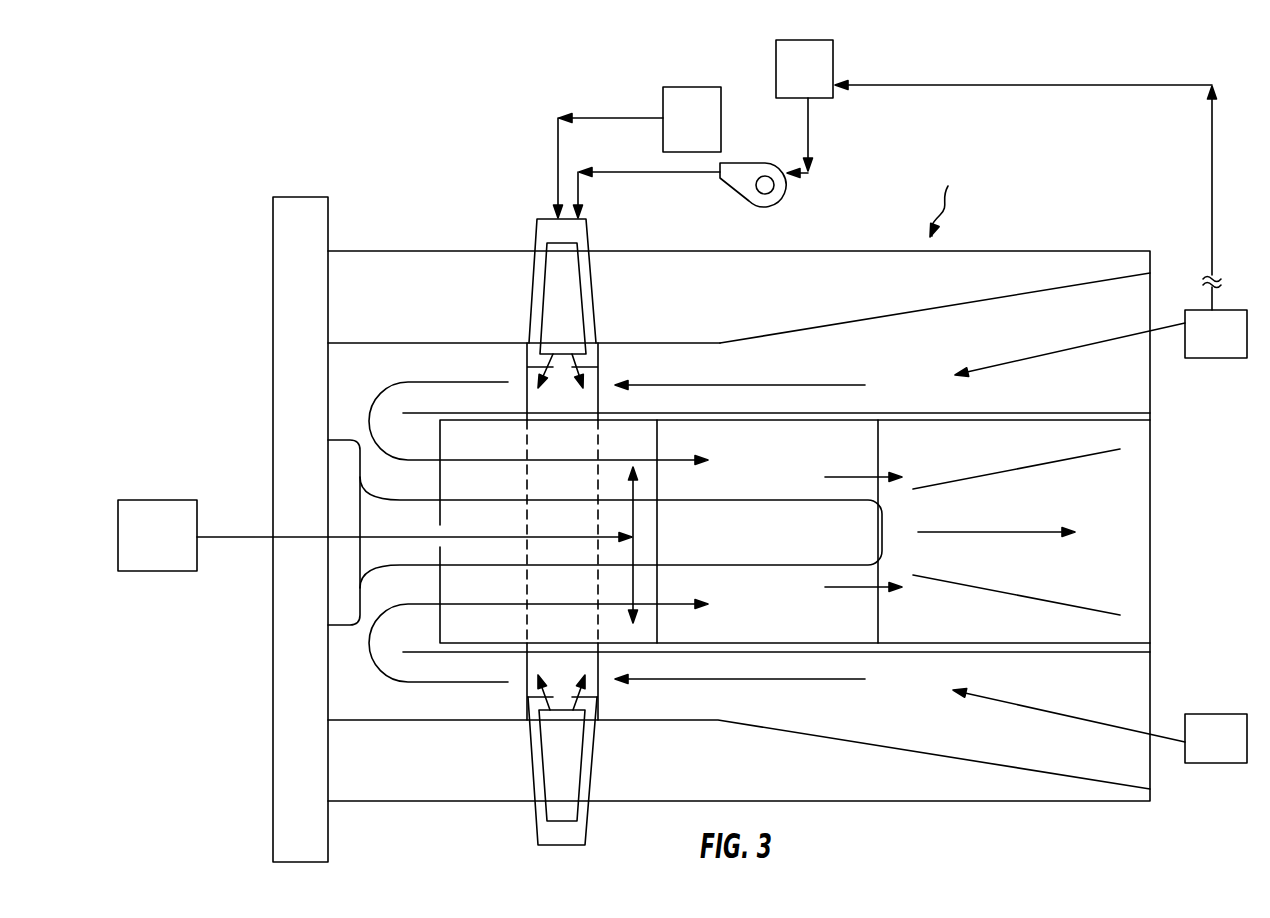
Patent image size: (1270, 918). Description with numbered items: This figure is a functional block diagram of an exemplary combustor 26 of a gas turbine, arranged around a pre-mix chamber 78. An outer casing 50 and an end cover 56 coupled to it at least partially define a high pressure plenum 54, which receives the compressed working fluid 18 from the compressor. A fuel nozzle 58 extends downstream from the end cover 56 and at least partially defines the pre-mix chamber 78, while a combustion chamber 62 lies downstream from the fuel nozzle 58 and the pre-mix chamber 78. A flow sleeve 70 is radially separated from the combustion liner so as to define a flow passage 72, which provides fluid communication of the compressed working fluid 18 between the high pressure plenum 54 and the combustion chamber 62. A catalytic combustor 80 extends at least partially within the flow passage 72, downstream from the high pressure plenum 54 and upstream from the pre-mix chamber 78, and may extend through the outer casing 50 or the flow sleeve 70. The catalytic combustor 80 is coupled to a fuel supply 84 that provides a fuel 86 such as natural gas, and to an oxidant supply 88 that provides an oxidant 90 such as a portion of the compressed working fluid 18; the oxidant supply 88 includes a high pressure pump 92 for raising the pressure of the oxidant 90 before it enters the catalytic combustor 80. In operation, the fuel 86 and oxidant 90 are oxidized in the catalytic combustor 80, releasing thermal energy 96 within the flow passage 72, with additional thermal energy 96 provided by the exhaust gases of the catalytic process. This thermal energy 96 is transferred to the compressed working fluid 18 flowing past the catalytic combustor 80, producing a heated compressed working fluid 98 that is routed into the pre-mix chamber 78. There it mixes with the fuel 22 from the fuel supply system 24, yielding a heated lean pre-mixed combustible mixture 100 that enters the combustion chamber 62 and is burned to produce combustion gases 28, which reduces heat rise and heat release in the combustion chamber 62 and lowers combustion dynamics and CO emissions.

The compressed working fluid 18 is at (1028, 357).
The fuel 22 is at (235, 537).
The fuel supply system 24 is at (168, 549).
The combustor 26 is at (949, 197).
The combustion gases 28 is at (1020, 533).
The outer casing 50 is at (408, 251).
The high pressure plenum 54 is at (1227, 349).
The end cover 56 is at (288, 656).
The fuel nozzle 58 is at (703, 552).
The combustion chamber 62 is at (1048, 511).
The flow sleeve 70 is at (1020, 293).
The flow passage 72 is at (943, 356).
The pre-mix chamber 78 is at (783, 466).
The catalytic combustor 80 is at (588, 229).
The fuel supply 84 is at (703, 134).
The fuel 86 is at (593, 118).
The oxidant supply 88 is at (815, 84).
The oxidant 90 is at (895, 84).
The high pressure pump 92 is at (782, 192).
The thermal energy 96 is at (540, 367).
The heated compressed working fluid 98 is at (413, 382).
The heated lean pre-mixed combustible mixture 100 is at (828, 477).